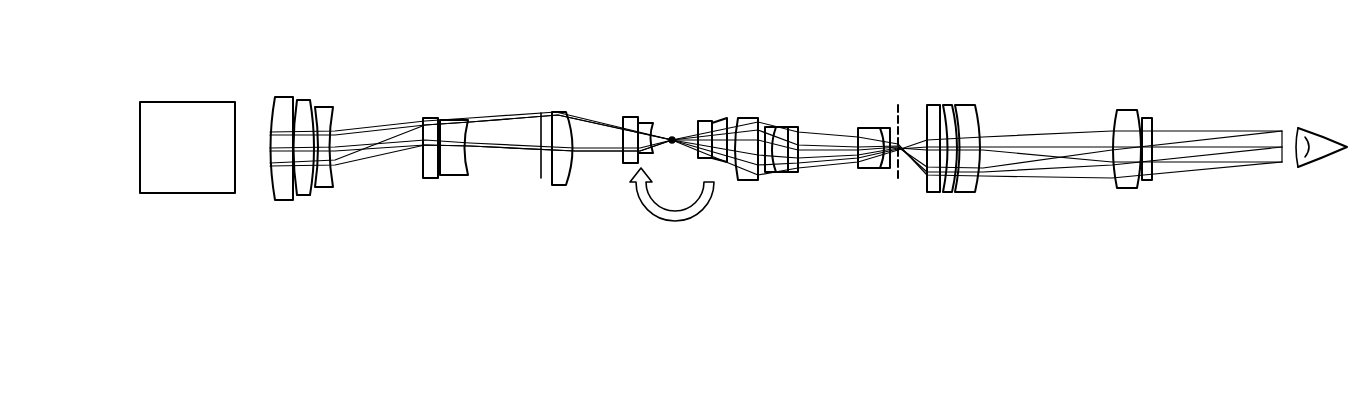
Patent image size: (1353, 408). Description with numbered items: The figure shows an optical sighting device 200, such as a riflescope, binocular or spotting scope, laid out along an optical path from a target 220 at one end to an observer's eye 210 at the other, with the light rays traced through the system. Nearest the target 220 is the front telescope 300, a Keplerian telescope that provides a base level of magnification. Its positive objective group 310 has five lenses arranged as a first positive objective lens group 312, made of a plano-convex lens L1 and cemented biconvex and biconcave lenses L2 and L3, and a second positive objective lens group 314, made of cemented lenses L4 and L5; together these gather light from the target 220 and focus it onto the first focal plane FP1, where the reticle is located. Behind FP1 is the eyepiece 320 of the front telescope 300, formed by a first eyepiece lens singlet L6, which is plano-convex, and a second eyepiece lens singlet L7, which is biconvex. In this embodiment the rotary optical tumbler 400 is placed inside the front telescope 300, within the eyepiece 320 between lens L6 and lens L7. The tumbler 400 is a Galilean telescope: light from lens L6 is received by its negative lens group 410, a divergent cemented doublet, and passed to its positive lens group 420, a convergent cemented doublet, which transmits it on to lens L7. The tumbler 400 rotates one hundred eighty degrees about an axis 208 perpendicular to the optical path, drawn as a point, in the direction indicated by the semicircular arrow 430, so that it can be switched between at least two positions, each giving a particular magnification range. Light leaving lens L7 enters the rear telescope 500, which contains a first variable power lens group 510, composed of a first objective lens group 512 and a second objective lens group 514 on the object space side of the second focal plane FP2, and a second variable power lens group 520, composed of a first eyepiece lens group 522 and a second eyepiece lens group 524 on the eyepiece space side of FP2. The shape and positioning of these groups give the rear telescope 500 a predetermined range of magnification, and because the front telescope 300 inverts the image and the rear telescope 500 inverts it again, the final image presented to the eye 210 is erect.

The optical sighting device 200 is at (1226, 65).
The eye 210 is at (1323, 166).
The target 220 is at (173, 172).
The axis 208 is at (671, 135).
The front telescope 300 is at (270, 195).
The positive objective group 310 is at (257, 51).
The first positive objective lens group 312 is at (273, 213).
The second positive objective lens group 314 is at (483, 213).
The eyepiece 320 is at (540, 51).
The rotary optical tumbler 400 is at (728, 195).
The negative lens group 410 is at (618, 90).
The positive lens group 420 is at (682, 90).
The semicircular arrow 430 is at (678, 205).
The rear telescope 500 is at (1152, 195).
The first variable power lens group 510 is at (868, 200).
The first objective lens group 512 is at (770, 213).
The second objective lens group 514 is at (843, 213).
The second variable power lens group 520 is at (1108, 200).
The first eyepiece lens group 522 is at (988, 213).
The second eyepiece lens group 524 is at (1110, 213).
The objective lens L1 is at (285, 96).
The objective lens L2 is at (306, 99).
The objective lens L3 is at (330, 106).
The objective lens L4 is at (432, 117).
The objective lens L5 is at (458, 136).
The first eyepiece lens singlet L6 is at (560, 111).
The second eyepiece lens singlet L7 is at (748, 117).
The first focal plane FP1 is at (532, 180).
The second focal plane FP2 is at (903, 107).